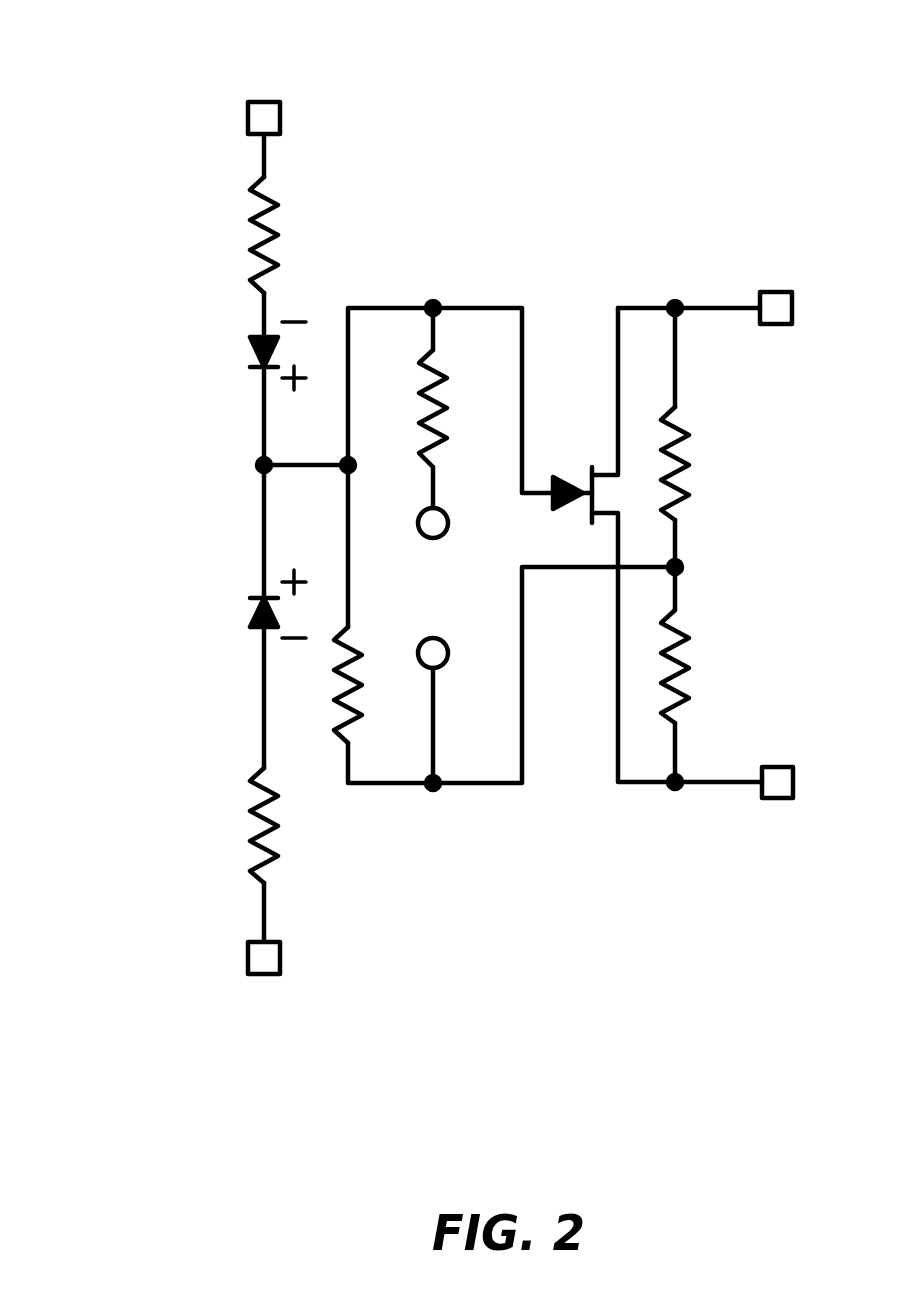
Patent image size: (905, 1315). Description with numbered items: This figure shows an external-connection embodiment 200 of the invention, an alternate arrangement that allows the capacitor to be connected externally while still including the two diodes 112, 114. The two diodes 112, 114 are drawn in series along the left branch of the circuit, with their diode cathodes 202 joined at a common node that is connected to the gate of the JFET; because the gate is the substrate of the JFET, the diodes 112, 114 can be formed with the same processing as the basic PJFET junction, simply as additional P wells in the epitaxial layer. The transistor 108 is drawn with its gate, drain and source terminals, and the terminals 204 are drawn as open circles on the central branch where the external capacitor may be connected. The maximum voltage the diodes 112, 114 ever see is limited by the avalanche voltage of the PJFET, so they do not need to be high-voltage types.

The external-connection embodiment 200 is at (112, 79).
The diode 112 is at (260, 365).
The diode 114 is at (260, 598).
The diode cathodes 202 is at (262, 465).
The transistor 108 is at (590, 467).
The terminal 204 is at (445, 531).